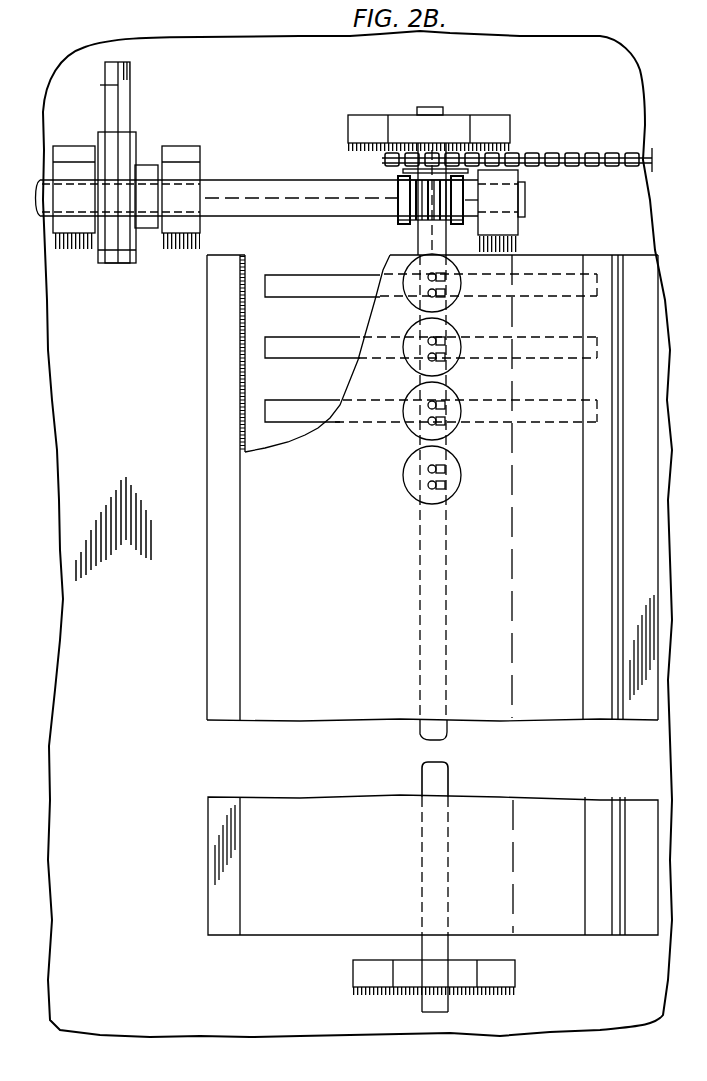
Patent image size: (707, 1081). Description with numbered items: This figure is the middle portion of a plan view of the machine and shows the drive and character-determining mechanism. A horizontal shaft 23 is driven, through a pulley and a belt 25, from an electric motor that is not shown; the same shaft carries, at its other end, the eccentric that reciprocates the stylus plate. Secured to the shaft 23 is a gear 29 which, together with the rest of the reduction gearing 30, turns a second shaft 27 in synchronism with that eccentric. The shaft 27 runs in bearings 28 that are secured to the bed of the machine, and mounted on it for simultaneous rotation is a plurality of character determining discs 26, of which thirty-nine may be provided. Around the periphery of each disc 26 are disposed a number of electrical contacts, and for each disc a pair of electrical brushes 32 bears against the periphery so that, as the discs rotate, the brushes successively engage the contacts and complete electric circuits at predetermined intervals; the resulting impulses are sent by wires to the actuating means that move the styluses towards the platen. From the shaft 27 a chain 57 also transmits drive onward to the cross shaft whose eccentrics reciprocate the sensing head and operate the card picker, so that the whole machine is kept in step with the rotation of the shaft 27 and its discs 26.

The shaft 23 is at (243, 195).
The belt 25 is at (140, 90).
The character determining discs 26 is at (328, 283).
The shaft 27 is at (420, 247).
The bearings 28 is at (455, 130).
The gear 29 is at (402, 180).
The reduction gearing 30 is at (400, 217).
The electrical brushes 32 is at (428, 279).
The chain 57 is at (590, 153).